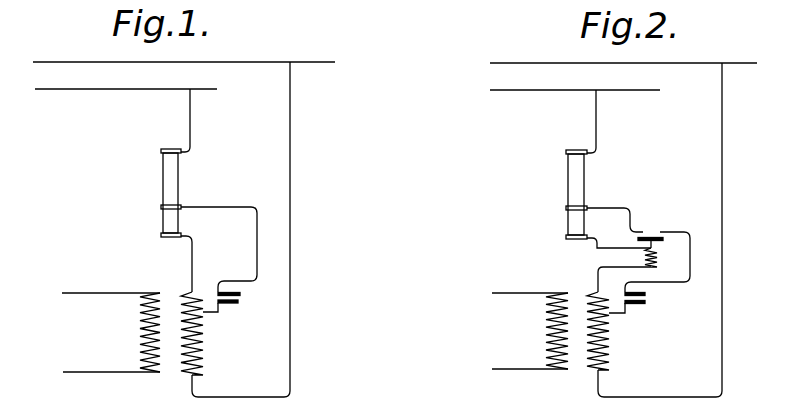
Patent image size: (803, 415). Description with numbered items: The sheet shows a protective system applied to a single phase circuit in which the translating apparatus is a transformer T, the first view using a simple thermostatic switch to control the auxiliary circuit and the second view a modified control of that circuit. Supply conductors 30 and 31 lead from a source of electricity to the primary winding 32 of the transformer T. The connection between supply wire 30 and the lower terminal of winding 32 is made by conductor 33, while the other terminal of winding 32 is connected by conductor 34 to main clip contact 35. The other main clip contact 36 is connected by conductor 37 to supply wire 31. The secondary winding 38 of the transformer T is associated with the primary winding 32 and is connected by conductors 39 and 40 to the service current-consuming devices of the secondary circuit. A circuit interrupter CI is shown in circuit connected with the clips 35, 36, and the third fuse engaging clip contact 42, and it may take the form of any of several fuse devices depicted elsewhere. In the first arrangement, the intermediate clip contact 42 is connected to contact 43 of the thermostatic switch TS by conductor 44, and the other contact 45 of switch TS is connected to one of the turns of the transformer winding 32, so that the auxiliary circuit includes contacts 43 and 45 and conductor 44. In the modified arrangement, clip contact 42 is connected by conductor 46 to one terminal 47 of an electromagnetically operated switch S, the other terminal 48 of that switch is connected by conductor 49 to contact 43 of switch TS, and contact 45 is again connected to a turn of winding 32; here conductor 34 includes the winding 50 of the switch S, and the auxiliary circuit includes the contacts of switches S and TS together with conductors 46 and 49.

In FIG. 1, the supply conductor 30 is at (39, 62).
In FIG. 2, the supply conductor 30 is at (538, 49).
In FIG. 1, the supply conductor 31 is at (72, 90).
In FIG. 2, the supply conductor 31 is at (495, 90).
In FIG. 1, the primary winding 32 is at (200, 345).
In FIG. 2, the primary winding 32 is at (608, 336).
In FIG. 1, the conductor 33 is at (290, 236).
In FIG. 2, the conductor 33 is at (722, 216).
In FIG. 1, the conductor 34 is at (192, 268).
In FIG. 2, the conductor 34 is at (597, 268).
In FIG. 1, the main clip contact 35 is at (171, 237).
In FIG. 2, the main clip contact 35 is at (572, 237).
In FIG. 1, the main clip contact 36 is at (170, 149).
In FIG. 2, the main clip contact 36 is at (575, 127).
In FIG. 1, the conductor 37 is at (190, 137).
In FIG. 2, the conductor 37 is at (596, 131).
In FIG. 1, the secondary winding 38 is at (138, 327).
In FIG. 2, the secondary winding 38 is at (548, 334).
In FIG. 1, the conductor 39 is at (112, 272).
In FIG. 1, the conductor 40 is at (106, 353).
In FIG. 1, the third fuse engaging clip contact 42 is at (181, 207).
In FIG. 2, the third fuse engaging clip contact 42 is at (587, 207).
In FIG. 1, the contact of thermostatic switch 43 is at (240, 295).
In FIG. 2, the contact of thermostatic switch 43 is at (645, 294).
In FIG. 1, the conductor 44 is at (257, 224).
In FIG. 1, the contact of thermostatic switch 45 is at (232, 306).
In FIG. 2, the contact of thermostatic switch 45 is at (632, 305).
In FIG. 2, the conductor 46 is at (630, 222).
In FIG. 2, the terminal of switch S 47 is at (643, 233).
In FIG. 2, the terminal of switch S 48 is at (662, 233).
In FIG. 2, the conductor 49 is at (690, 264).
In FIG. 2, the winding of switch S 50 is at (657, 246).
In FIG. 1, the circuit interrupter CI is at (174, 181).
In FIG. 2, the circuit interrupter CI is at (578, 182).
In FIG. 1, the thermostatic switch TS is at (238, 301).
In FIG. 2, the thermostatic switch TS is at (648, 304).
In FIG. 2, the electromagnetically operated switch S is at (643, 256).
In FIG. 1, the transformer T is at (163, 350).
In FIG. 2, the transformer T is at (582, 345).